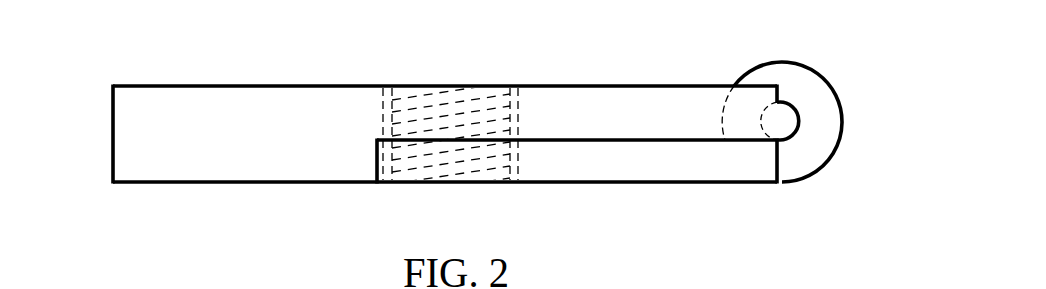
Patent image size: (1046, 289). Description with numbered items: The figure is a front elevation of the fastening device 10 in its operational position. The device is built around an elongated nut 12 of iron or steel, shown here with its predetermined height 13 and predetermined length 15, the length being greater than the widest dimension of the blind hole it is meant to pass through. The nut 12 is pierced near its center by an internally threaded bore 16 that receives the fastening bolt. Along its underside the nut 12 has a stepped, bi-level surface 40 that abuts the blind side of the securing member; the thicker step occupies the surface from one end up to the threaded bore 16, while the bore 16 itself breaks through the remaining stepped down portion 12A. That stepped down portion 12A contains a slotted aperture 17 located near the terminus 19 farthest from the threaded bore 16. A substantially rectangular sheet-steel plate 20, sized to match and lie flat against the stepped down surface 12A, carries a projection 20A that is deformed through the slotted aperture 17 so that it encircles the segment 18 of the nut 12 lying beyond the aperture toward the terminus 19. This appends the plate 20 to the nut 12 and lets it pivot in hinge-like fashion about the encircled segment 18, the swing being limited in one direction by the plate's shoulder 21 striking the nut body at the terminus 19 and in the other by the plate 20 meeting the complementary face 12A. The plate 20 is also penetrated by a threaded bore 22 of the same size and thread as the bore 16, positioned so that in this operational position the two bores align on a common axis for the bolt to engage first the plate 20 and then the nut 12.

The fastening device 10 is at (143, 115).
The elongated nut 12 is at (245, 189).
The stepped down portion 12A is at (577, 187).
The height 13 is at (106, 146).
The length 15 is at (606, 84).
The internally threaded bore 16 is at (450, 103).
The slotted aperture 17 is at (712, 83).
The encircled segment 18 is at (783, 122).
The terminus 19 is at (784, 89).
The plate 20 is at (584, 197).
The projection 20A is at (823, 135).
The shoulder 21 is at (787, 162).
The threaded bore 22 is at (451, 188).
The stepped bi-level surface 40 is at (382, 158).